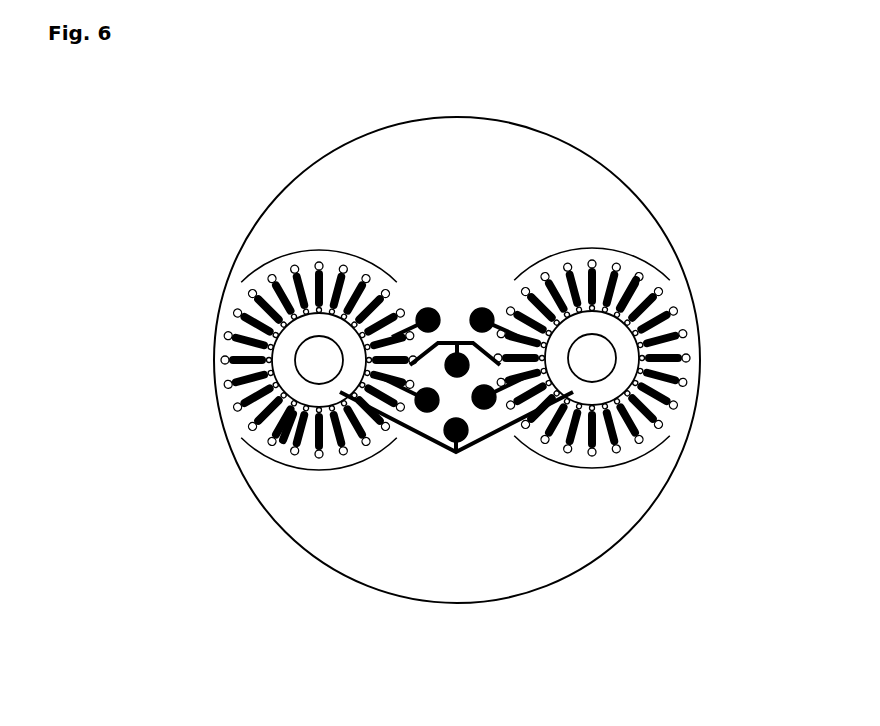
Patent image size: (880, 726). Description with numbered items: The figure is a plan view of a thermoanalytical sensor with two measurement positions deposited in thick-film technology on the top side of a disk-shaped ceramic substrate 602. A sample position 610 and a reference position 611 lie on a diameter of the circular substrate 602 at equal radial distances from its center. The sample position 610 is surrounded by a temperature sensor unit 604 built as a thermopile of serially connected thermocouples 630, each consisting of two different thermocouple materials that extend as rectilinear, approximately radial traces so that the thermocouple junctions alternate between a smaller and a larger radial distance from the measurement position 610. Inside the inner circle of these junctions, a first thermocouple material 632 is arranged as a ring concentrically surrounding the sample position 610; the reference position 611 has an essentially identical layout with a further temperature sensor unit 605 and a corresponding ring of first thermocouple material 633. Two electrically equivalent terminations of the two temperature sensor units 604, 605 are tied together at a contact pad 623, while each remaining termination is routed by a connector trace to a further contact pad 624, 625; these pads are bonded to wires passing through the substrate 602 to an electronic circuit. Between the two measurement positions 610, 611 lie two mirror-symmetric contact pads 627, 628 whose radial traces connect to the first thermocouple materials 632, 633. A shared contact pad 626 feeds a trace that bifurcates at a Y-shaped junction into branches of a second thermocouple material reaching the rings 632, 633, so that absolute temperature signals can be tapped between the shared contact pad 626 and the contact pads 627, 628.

The disk-shaped ceramic substrate 602 is at (320, 180).
The temperature sensor unit 604 is at (247, 325).
The further temperature sensor unit 605 is at (592, 263).
The sample position 610 is at (217, 388).
The reference position 611 is at (681, 358).
The contact pad 623 is at (407, 208).
The further contact pad 624 is at (358, 205).
The further contact pad 625 is at (444, 186).
The shared contact pad 626 is at (539, 487).
The contact pad 627 is at (329, 504).
The contact pad 628 is at (621, 453).
The thermocouples 630 is at (222, 360).
The first thermocouple material 632 is at (220, 479).
The first thermocouple material 633 is at (685, 248).